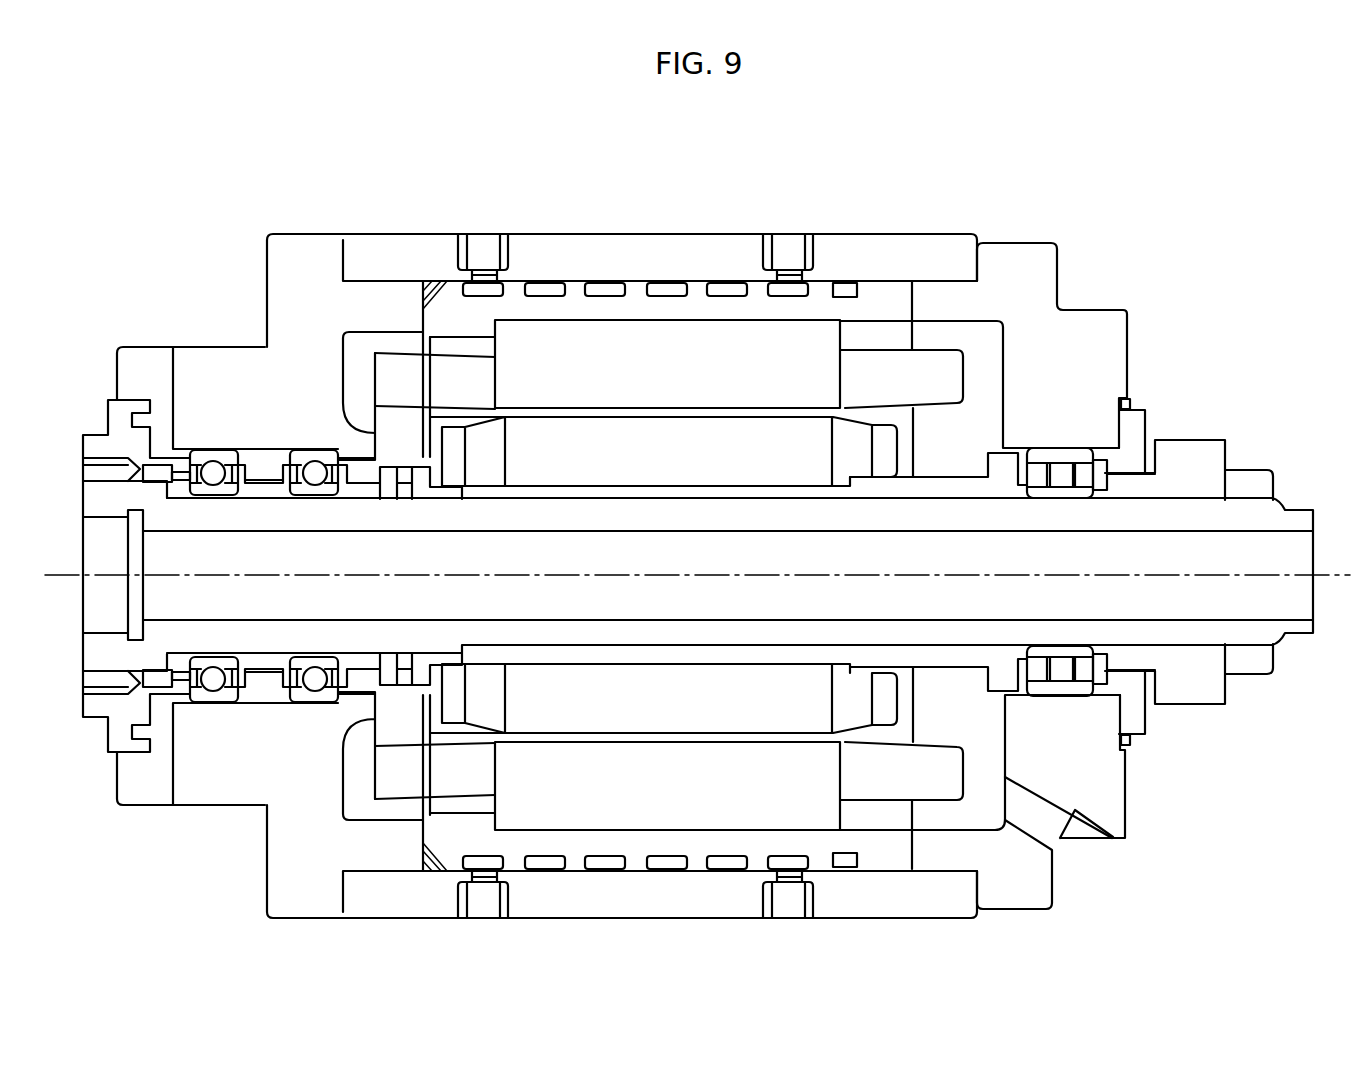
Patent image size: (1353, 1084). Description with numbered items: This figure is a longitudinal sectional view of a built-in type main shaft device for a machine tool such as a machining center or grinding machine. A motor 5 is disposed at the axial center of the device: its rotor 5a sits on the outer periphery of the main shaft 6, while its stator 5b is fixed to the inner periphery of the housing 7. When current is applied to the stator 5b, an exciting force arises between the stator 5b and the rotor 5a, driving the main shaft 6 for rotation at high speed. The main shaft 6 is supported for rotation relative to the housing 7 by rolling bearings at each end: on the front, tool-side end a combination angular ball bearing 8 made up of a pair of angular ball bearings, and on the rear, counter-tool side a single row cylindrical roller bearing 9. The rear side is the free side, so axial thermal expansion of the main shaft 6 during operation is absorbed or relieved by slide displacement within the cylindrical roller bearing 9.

The motor 5 is at (881, 322).
The rotor 5a is at (573, 433).
The stator 5b is at (641, 347).
The main shaft 6 is at (1175, 521).
The housing 7 is at (743, 229).
The combination angular ball bearing 8 is at (216, 430).
The single row cylindrical roller bearing 9 is at (1073, 441).